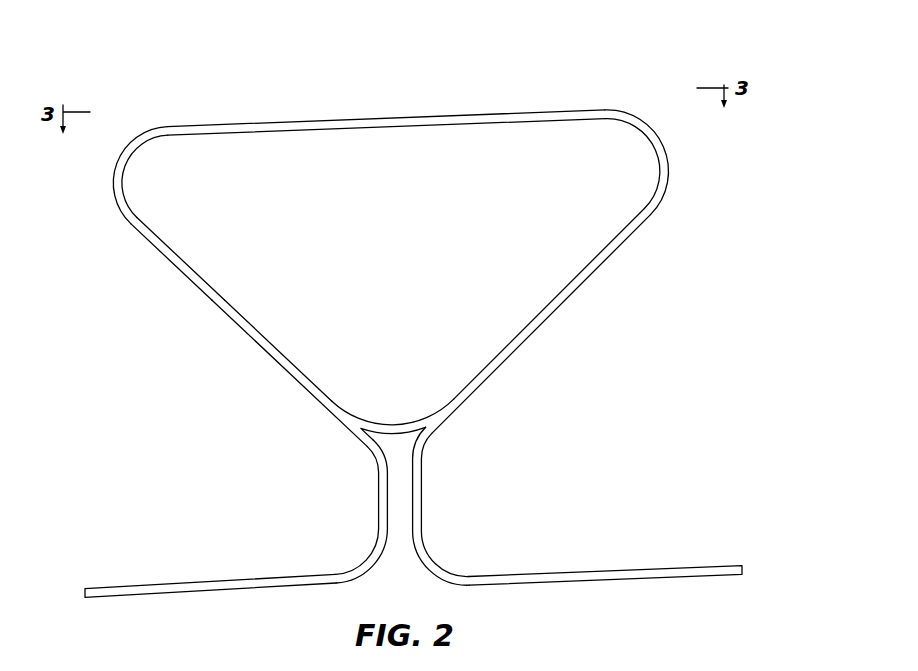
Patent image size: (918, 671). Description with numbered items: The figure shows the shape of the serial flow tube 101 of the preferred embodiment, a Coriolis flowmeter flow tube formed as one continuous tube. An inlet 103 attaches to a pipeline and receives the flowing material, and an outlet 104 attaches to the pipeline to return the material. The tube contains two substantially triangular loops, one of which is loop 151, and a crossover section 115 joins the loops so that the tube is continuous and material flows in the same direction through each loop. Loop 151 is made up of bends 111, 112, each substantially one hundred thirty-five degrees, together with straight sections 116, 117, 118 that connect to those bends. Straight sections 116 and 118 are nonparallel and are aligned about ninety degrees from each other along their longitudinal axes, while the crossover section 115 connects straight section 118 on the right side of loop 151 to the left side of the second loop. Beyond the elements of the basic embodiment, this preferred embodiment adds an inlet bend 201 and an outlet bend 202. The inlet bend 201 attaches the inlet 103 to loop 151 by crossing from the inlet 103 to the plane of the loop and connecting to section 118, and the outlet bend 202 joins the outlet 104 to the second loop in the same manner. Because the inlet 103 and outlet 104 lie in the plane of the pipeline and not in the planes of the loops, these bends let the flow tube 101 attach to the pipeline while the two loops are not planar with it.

The serial flow tube 101 is at (435, 304).
The bend 111 is at (127, 170).
The bend 112 is at (653, 152).
The straight section 117 is at (392, 119).
The straight section 116 is at (262, 352).
The straight section 118 is at (537, 330).
The crossover section 115 is at (401, 423).
The loop 151 is at (138, 242).
The inlet bend 201 is at (377, 499).
The outlet bend 202 is at (425, 490).
The inlet 103 is at (85, 592).
The outlet 104 is at (745, 569).